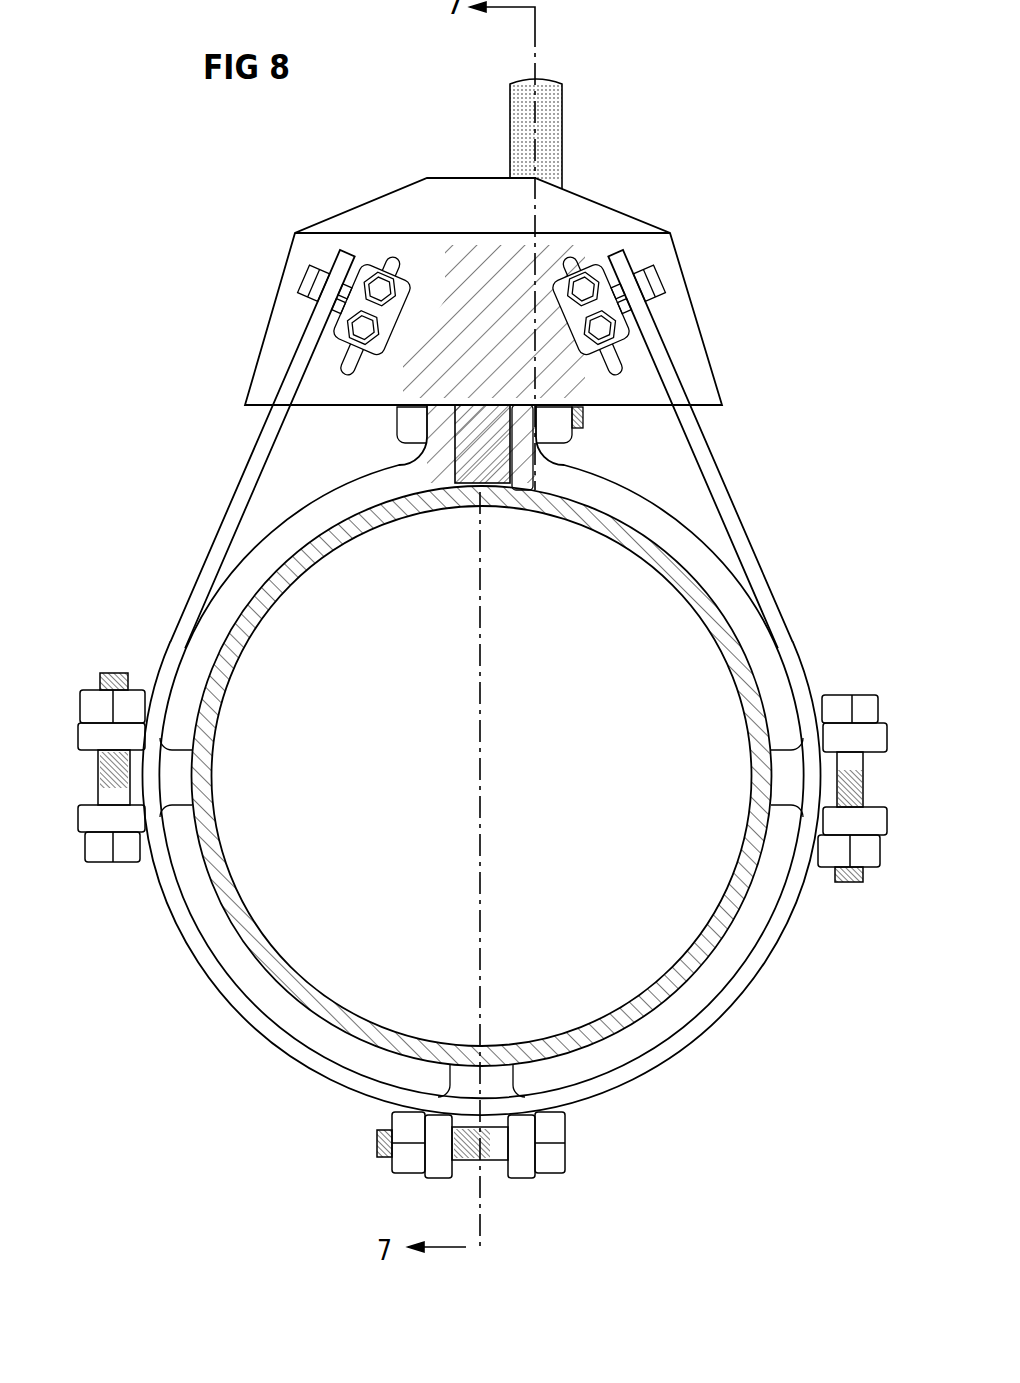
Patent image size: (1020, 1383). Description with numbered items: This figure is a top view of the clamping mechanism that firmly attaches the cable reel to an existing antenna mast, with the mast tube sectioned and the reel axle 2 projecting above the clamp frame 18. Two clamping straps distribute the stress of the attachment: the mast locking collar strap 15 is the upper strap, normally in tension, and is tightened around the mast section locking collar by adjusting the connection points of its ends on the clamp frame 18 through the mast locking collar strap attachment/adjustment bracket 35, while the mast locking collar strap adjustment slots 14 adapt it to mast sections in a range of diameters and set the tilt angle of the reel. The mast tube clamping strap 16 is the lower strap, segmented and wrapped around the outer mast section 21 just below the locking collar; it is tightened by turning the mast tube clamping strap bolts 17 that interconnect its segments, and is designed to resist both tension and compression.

The reel axle 2 is at (510, 123).
The mast locking collar strap adjustment slot 14 is at (350, 372).
The mast locking collar strap 15 is at (250, 470).
The mast tube clamping strap 16 is at (612, 493).
The mast tube clamping strap bolt 17 is at (95, 705).
The clamp frame 18 is at (398, 205).
The outer mast section at middle joint of mast 21 is at (705, 945).
The mast locking collar strap attachment/adjustment bracket 35 is at (594, 262).